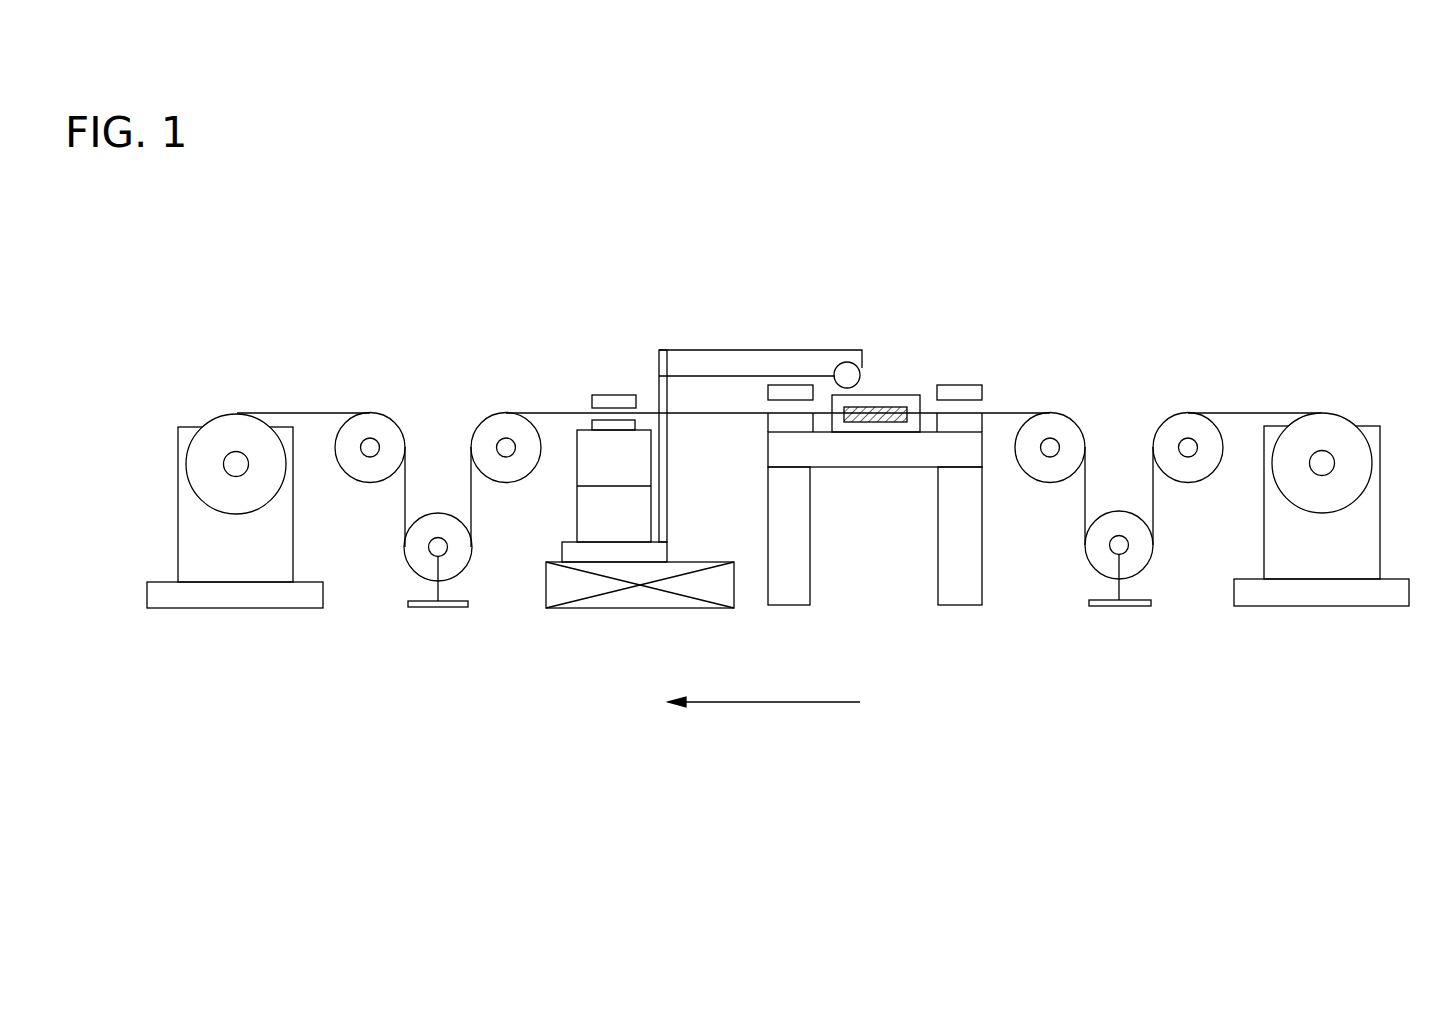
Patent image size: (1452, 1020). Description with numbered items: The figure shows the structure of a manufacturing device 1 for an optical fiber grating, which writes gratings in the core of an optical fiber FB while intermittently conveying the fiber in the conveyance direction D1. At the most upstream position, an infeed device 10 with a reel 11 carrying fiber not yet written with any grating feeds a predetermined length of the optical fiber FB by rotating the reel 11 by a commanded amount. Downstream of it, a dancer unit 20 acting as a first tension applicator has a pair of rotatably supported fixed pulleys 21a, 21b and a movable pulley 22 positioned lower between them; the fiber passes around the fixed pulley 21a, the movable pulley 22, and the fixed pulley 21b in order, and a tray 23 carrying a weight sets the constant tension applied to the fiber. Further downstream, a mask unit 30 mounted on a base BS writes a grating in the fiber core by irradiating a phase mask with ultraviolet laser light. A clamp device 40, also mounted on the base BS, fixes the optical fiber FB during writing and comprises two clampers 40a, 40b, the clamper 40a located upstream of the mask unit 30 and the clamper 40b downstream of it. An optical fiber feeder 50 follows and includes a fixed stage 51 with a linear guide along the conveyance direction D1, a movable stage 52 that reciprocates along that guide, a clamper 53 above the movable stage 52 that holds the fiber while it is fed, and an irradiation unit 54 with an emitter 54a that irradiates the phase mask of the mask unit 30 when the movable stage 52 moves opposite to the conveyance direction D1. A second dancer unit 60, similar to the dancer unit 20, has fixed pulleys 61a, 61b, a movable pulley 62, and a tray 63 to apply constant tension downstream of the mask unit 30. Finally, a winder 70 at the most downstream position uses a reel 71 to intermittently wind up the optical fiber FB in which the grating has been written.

The manufacturing device 1 is at (1234, 267).
The infeed device 10 is at (1336, 458).
The reel 11 is at (1355, 465).
The dancer unit 20 is at (1120, 514).
The fixed pulley 21a is at (1188, 468).
The fixed pulley 21b is at (1051, 468).
The movable pulley 22 is at (1100, 555).
The tray 23 is at (1137, 606).
The mask unit 30 is at (900, 383).
The clamp device 40 is at (875, 525).
The clamper 40a is at (960, 441).
The clamper 40b is at (792, 441).
The base BS is at (958, 593).
The optical fiber feeder 50 is at (709, 457).
The fixed stage 51 is at (640, 593).
The movable stage 52 is at (588, 513).
The clamper 53 is at (613, 383).
The irradiation unit 54 is at (782, 362).
The emitter 54a is at (852, 372).
The dancer unit 60 is at (438, 516).
The fixed pulley 61a is at (503, 477).
The fixed pulley 61b is at (370, 470).
The movable pulley 62 is at (418, 557).
The tray 63 is at (453, 607).
The winder 70 is at (218, 459).
The reel 71 is at (200, 465).
The optical fiber FB is at (1259, 412).
The conveyance direction D1 is at (772, 703).